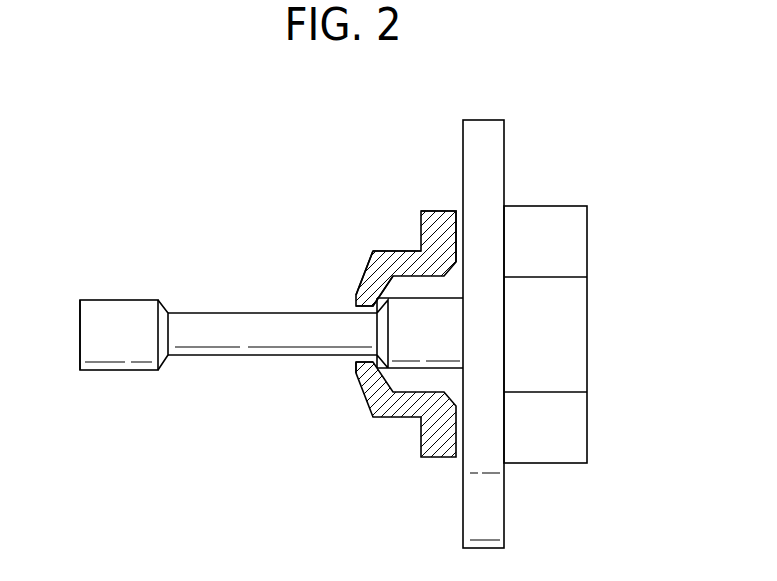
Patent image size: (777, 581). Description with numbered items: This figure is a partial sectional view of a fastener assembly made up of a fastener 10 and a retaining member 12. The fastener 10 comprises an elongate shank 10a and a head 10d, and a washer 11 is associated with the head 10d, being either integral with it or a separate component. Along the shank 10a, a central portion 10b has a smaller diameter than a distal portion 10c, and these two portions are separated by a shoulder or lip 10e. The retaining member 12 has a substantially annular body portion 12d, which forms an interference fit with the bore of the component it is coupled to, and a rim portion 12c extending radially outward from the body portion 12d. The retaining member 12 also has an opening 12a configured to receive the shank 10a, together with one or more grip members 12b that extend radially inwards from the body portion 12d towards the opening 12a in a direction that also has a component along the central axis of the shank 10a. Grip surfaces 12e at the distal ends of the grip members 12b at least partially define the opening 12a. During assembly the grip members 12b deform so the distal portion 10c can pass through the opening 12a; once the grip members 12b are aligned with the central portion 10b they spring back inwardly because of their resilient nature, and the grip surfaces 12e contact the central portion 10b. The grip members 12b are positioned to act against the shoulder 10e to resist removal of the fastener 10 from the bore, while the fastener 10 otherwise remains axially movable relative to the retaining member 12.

The fastener 10 is at (599, 454).
The elongate shank 10a is at (137, 300).
The central portion 10b is at (212, 313).
The distal portion 10c is at (105, 298).
The head 10d is at (570, 203).
The shoulder 10e is at (163, 362).
The washer 11 is at (505, 132).
The retaining member 12 is at (394, 189).
The opening 12a is at (353, 308).
The grip members 12b is at (371, 397).
The rim portion 12c is at (435, 212).
The body portion 12d is at (397, 251).
The grip surfaces 12e is at (355, 361).